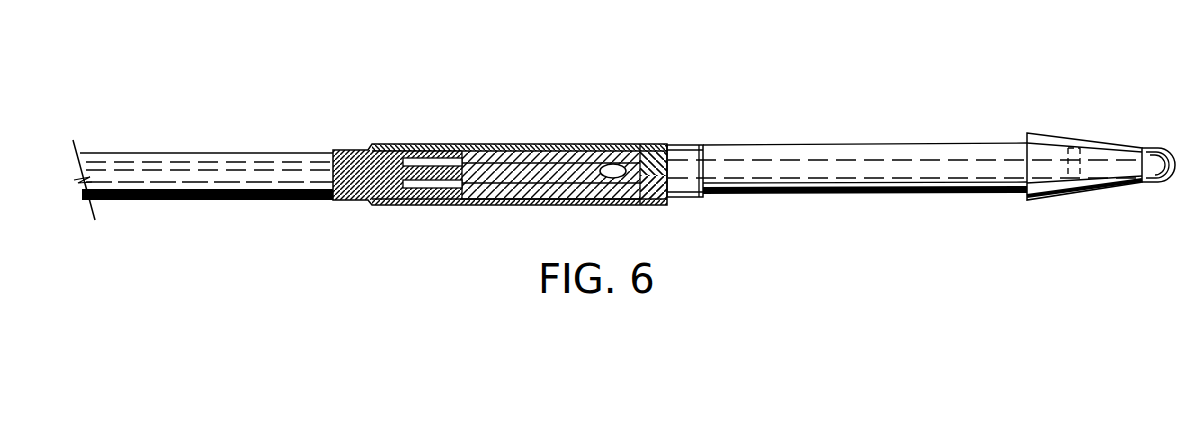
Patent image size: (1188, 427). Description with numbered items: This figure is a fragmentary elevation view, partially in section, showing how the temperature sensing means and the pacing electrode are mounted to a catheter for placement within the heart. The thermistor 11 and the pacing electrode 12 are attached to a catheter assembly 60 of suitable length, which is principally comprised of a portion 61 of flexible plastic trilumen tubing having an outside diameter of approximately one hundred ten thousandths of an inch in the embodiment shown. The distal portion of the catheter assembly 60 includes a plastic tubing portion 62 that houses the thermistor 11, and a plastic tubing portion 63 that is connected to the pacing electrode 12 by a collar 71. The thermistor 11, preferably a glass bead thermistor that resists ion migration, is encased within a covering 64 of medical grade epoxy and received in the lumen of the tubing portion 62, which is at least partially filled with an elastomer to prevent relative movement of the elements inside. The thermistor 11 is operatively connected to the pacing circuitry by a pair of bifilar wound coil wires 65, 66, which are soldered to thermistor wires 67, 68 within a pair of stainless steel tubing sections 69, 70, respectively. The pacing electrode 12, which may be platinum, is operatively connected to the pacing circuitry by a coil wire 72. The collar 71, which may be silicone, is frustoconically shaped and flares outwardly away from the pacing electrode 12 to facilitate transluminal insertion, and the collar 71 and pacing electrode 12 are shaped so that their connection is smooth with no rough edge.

The catheter assembly 60 is at (673, 84).
The portion of flexible plastic trilumen tubing 61 is at (215, 160).
The plastic tubing portion 62 is at (693, 202).
The plastic tubing portion 63 is at (813, 193).
The covering 64 is at (562, 145).
The bifilar wound coil wire 65 is at (348, 152).
The bifilar wound coil wire 66 is at (355, 199).
The thermistor wire 67 is at (495, 160).
The thermistor wire 68 is at (513, 196).
The stainless steel tubing section 69 is at (418, 160).
The stainless steel tubing section 70 is at (452, 197).
The collar 71 is at (1043, 200).
The coil wire 72 is at (836, 167).
The thermistor 11 is at (613, 168).
The pacing electrode 12 is at (1158, 157).